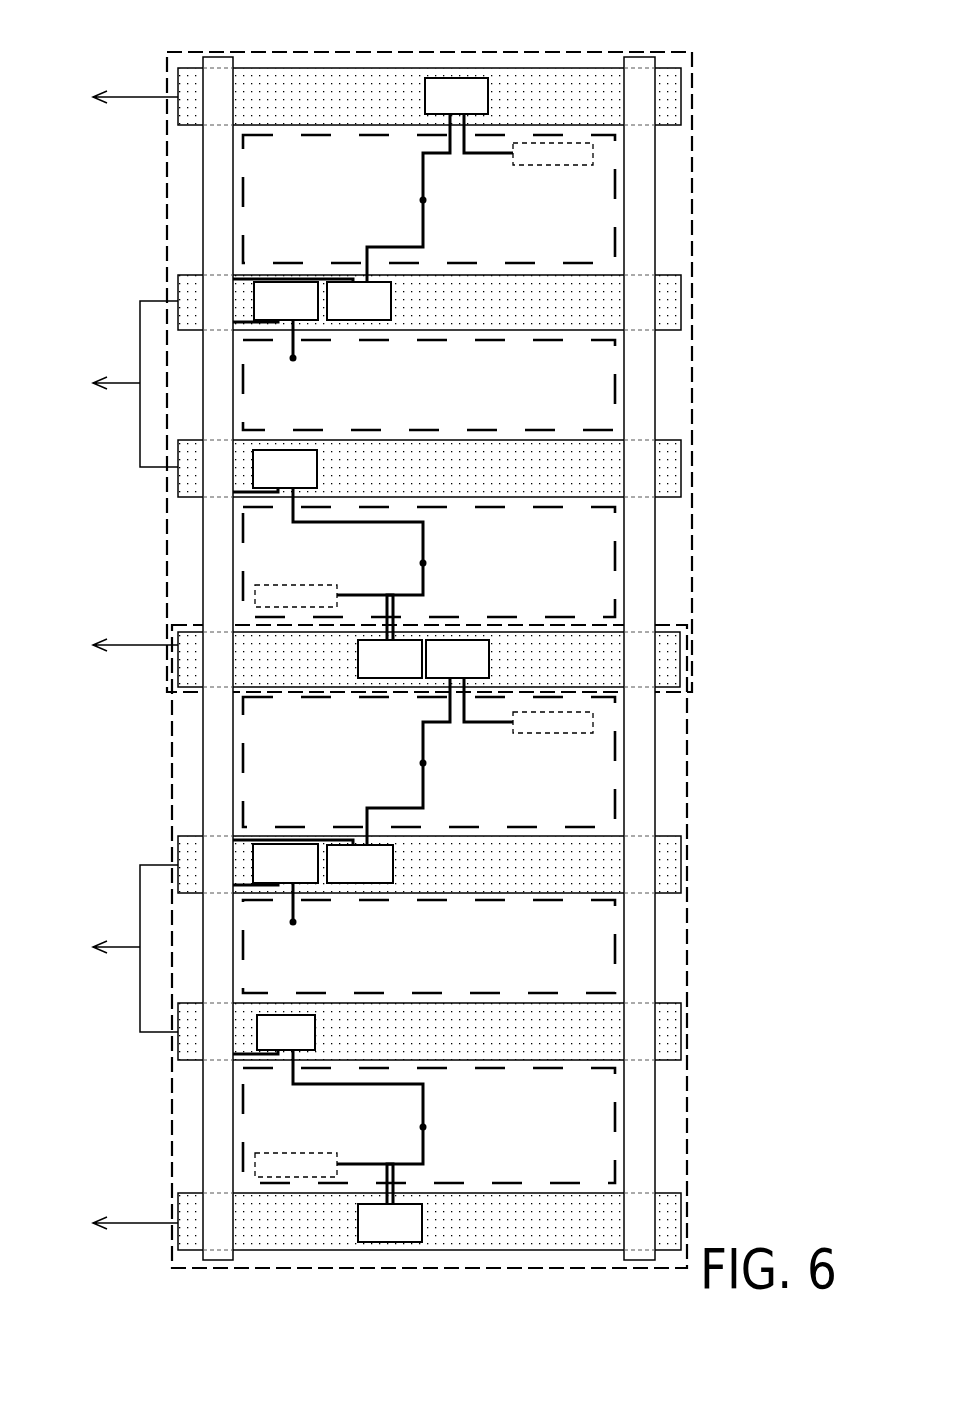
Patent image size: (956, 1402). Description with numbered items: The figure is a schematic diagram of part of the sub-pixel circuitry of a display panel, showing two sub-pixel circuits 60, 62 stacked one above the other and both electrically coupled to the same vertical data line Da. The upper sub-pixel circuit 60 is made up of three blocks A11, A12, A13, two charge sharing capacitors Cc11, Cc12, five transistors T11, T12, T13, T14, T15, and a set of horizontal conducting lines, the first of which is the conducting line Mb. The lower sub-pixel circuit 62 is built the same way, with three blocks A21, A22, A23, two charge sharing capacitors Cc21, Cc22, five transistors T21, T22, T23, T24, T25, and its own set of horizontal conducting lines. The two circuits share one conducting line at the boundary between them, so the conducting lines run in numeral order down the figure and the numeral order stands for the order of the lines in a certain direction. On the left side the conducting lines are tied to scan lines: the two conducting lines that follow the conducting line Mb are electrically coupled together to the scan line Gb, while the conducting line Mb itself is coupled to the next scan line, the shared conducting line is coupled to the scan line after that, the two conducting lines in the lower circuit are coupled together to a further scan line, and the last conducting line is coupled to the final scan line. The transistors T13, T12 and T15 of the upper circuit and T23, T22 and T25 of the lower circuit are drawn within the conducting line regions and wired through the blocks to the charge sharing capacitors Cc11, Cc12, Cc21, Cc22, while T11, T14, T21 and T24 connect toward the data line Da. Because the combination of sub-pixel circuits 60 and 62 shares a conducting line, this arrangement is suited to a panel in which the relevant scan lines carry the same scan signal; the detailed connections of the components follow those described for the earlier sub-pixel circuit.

The sub-pixel circuit 60 is at (692, 340).
The sub-pixel circuit 62 is at (687, 833).
The data line Da is at (429, 638).
The conducting line Mb is at (402, 92).
The scan line Gb is at (115, 384).
The transistor T11 is at (286, 301).
The transistor T12 is at (359, 301).
The transistor T13 is at (456, 96).
The transistor T14 is at (285, 469).
The transistor T15 is at (390, 659).
The transistor T21 is at (285, 863).
The transistor T22 is at (360, 864).
The transistor T23 is at (457, 659).
The transistor T24 is at (286, 1033).
The transistor T25 is at (390, 1223).
The block A11 is at (615, 408).
The block A12 is at (615, 188).
The block A13 is at (615, 588).
The block A21 is at (615, 970).
The block A22 is at (615, 750).
The block A23 is at (615, 1155).
The charge sharing capacitor Cc11 is at (615, 143).
The charge sharing capacitor Cc12 is at (255, 593).
The charge sharing capacitor Cc21 is at (615, 712).
The charge sharing capacitor Cc22 is at (255, 1163).